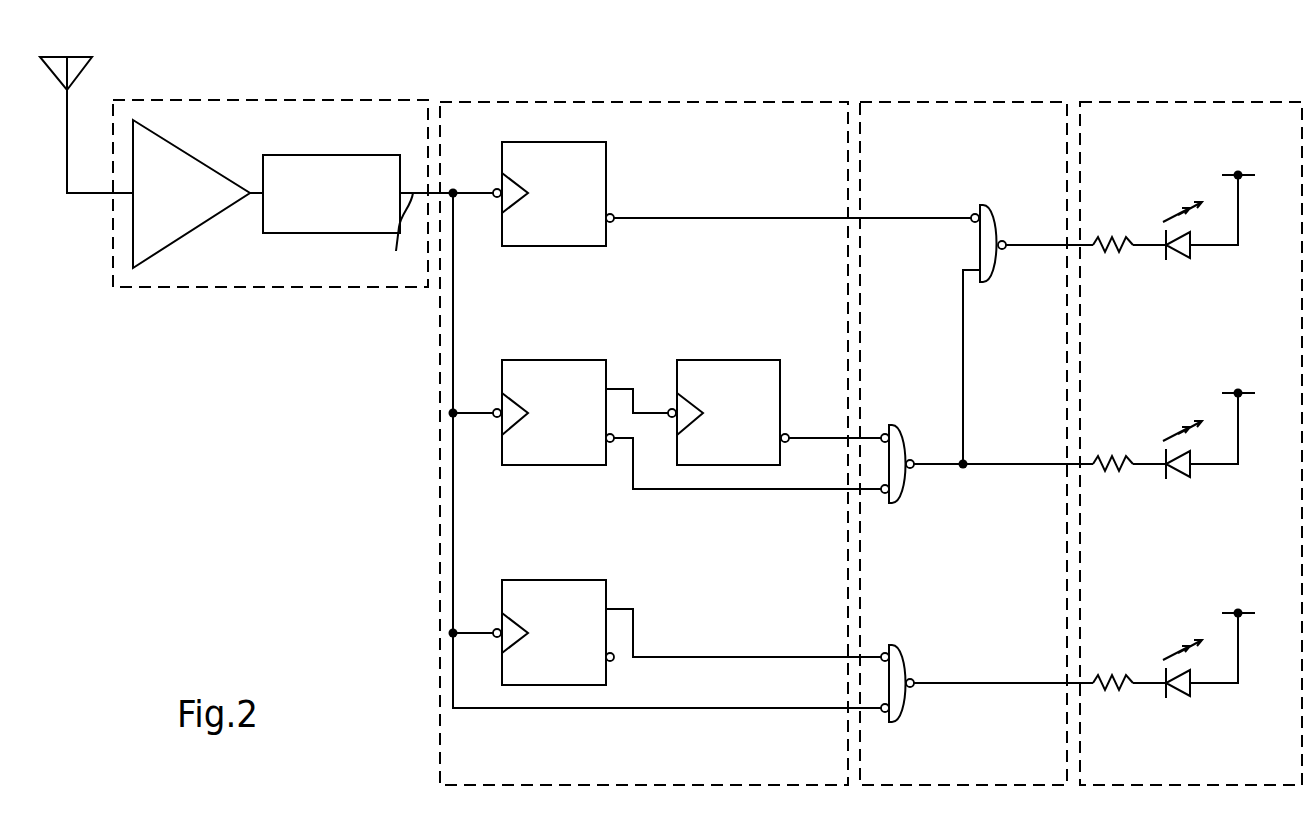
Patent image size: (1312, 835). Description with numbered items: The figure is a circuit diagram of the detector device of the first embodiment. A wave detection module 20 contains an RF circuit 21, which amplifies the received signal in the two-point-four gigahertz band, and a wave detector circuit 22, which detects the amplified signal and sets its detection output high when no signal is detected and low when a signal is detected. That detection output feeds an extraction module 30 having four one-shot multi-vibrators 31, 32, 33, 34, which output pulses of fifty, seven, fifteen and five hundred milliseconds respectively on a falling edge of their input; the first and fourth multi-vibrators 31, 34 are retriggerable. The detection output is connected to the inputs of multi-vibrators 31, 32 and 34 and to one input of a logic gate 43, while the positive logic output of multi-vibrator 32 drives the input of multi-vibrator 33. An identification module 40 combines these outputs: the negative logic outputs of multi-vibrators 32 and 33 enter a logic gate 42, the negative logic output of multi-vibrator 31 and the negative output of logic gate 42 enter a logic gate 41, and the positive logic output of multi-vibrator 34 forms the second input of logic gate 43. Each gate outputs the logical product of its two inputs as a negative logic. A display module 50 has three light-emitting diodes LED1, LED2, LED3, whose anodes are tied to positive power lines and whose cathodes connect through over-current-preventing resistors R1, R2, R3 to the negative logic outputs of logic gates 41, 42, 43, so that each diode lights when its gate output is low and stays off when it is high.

The wave detection module 20 is at (313, 100).
The RF circuit 21 is at (195, 155).
The wave detector circuit 22 is at (370, 155).
The extraction module 30 is at (657, 102).
The one-shot multi-vibrator 31 is at (595, 142).
The one-shot multi-vibrator 32 is at (595, 360).
The one-shot multi-vibrator 33 is at (768, 360).
The one-shot multi-vibrator 34 is at (595, 580).
The identification module 40 is at (957, 102).
The logic gate 41 is at (989, 282).
The logic gate 42 is at (900, 503).
The logic gate 43 is at (900, 645).
The display module 50 is at (1172, 102).
The resistor R1 is at (1108, 252).
The resistor R2 is at (1108, 471).
The resistor R3 is at (1108, 690).
The light-emitting diode LED1 is at (1183, 258).
The light-emitting diode LED2 is at (1183, 477).
The light-emitting diode LED3 is at (1183, 696).